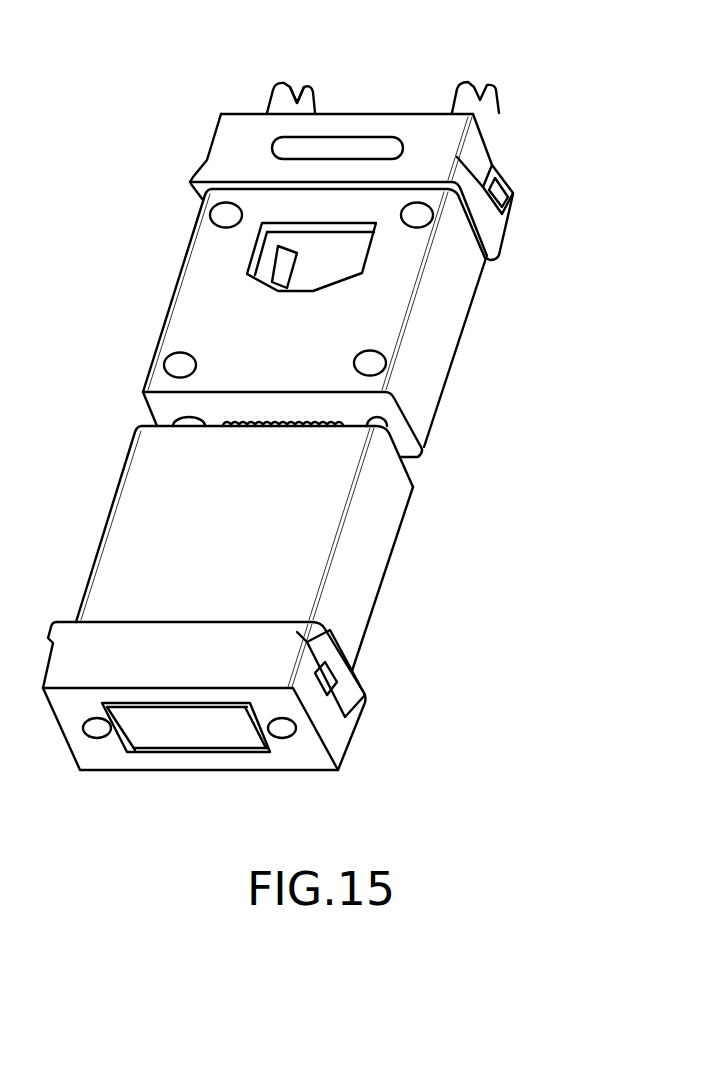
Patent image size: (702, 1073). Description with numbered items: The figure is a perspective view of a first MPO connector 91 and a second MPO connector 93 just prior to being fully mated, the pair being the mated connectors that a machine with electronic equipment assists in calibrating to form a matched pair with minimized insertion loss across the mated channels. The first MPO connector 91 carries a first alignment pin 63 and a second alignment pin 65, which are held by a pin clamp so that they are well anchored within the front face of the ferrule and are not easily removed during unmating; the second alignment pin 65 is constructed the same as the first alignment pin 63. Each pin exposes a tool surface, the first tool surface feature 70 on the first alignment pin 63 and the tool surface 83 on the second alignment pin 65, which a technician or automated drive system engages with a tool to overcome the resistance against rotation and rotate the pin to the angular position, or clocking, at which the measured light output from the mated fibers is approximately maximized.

The first MPO connector 91 is at (345, 243).
The second MPO connector 93 is at (80, 519).
The first alignment pin 63 is at (262, 97).
The first tool surface feature 70 is at (297, 102).
The tool surface 83 is at (480, 100).
The second alignment pin 65 is at (500, 120).